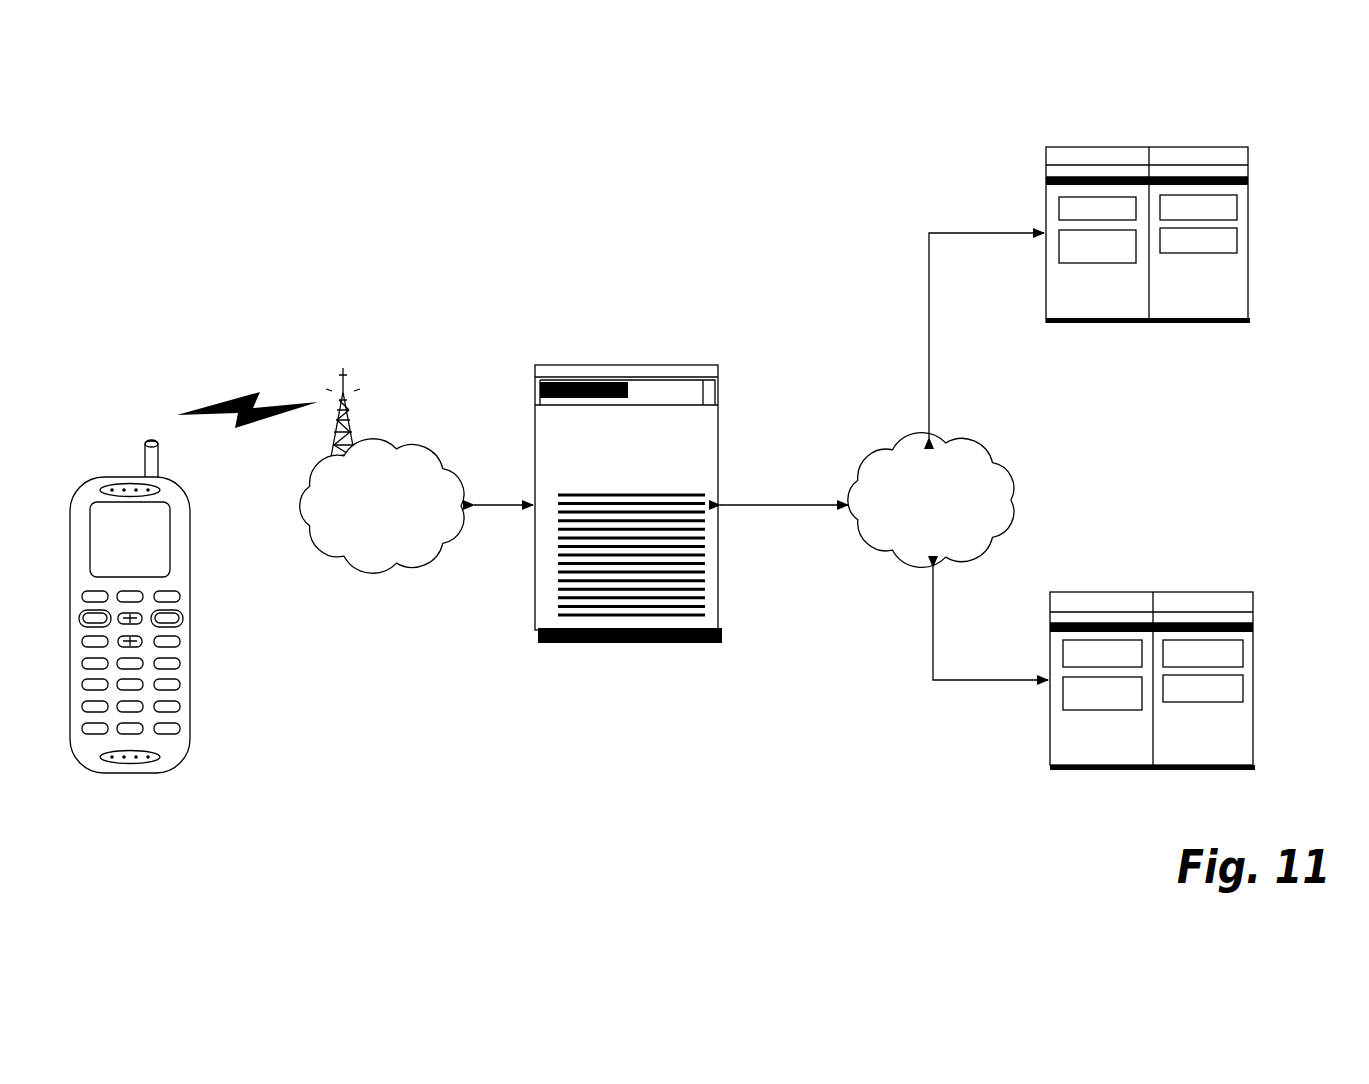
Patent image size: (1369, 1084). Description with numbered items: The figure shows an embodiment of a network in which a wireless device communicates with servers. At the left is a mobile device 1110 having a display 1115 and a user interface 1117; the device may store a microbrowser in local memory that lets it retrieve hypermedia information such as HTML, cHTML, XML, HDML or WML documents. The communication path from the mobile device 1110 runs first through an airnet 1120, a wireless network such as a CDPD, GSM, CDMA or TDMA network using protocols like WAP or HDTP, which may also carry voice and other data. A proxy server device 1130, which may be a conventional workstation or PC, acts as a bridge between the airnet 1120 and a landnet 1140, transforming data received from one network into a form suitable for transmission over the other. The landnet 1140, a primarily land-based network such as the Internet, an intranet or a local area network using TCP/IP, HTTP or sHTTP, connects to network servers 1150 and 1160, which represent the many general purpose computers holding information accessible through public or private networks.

The mobile device 1110 is at (171, 606).
The display 1115 is at (171, 542).
The user interface 1117 is at (178, 580).
The airnet 1120 is at (436, 452).
The proxy server device 1130 is at (660, 366).
The landnet 1140 is at (993, 441).
The network server 1150 is at (1150, 147).
The network server 1160 is at (1155, 592).